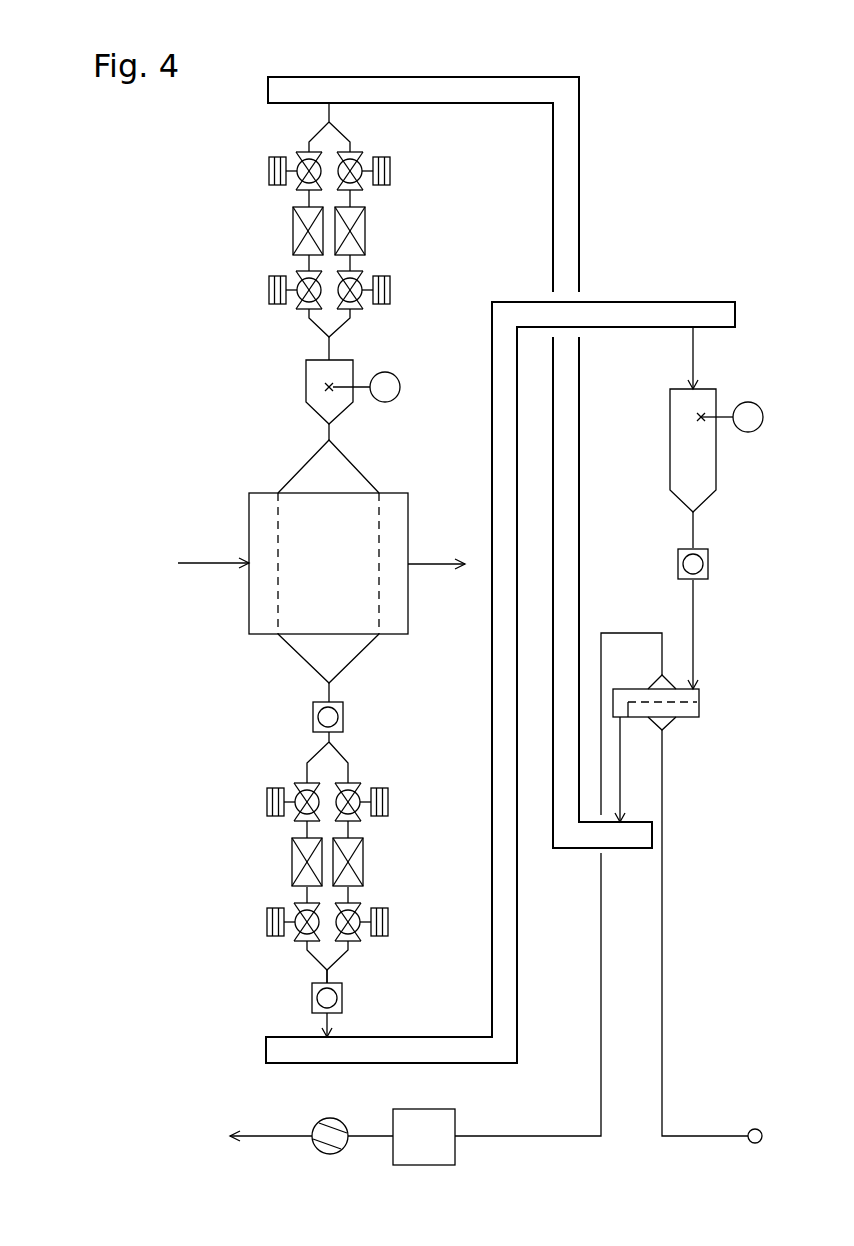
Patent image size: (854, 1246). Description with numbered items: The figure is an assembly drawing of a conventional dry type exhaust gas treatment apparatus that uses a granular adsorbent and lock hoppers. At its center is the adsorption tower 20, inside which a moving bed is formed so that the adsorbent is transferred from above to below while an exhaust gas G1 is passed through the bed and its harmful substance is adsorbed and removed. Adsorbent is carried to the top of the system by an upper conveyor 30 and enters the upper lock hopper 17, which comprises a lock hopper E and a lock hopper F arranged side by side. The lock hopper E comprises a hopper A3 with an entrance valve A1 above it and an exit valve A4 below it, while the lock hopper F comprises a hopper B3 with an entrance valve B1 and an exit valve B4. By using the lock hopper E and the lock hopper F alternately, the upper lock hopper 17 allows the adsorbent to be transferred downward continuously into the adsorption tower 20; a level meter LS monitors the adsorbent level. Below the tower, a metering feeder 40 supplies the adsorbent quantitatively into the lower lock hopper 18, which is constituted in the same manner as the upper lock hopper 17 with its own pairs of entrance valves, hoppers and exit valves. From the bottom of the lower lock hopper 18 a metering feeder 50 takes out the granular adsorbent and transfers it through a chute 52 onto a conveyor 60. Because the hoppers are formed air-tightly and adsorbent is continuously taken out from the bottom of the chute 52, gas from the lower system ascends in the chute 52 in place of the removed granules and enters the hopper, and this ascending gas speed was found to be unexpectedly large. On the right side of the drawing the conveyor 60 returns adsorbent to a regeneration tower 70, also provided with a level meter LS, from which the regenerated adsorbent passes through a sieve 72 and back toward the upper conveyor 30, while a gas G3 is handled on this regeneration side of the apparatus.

The upper lock hopper 17 is at (200, 180).
The lower lock hopper 18 is at (186, 748).
The adsorption tower 20 is at (364, 474).
The conveyor 30 is at (485, 100).
The metering feeder 40 is at (341, 702).
The metering feeder 50 is at (311, 1004).
The chute 52 is at (330, 978).
The conveyor 60 is at (392, 1036).
The regeneration tower 70 is at (685, 465).
The sieve 72 is at (685, 707).
The entrance valve A1 is at (301, 151).
The hopper A3 is at (293, 218).
The exit valve A4 is at (300, 311).
The entrance valve B1 is at (357, 151).
The hopper B3 is at (366, 229).
The exit valve B4 is at (358, 311).
The lock hopper E is at (262, 243).
The lock hopper F is at (385, 246).
The exhaust gas G1 is at (199, 567).
The gas G3 is at (716, 1133).
The level meter LS is at (534, 396).